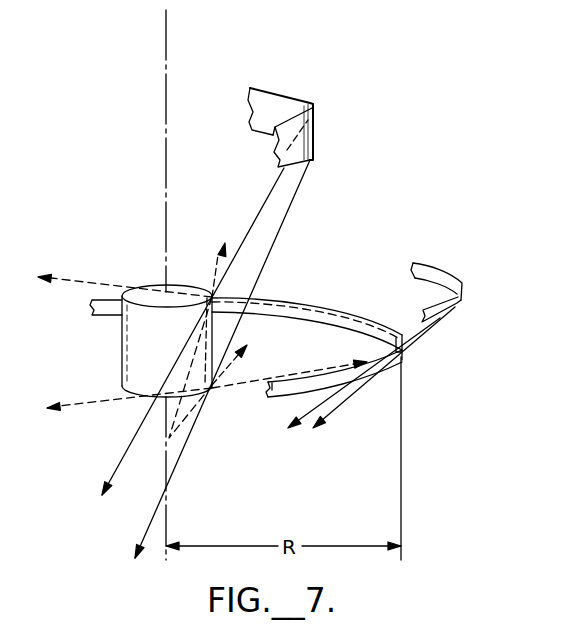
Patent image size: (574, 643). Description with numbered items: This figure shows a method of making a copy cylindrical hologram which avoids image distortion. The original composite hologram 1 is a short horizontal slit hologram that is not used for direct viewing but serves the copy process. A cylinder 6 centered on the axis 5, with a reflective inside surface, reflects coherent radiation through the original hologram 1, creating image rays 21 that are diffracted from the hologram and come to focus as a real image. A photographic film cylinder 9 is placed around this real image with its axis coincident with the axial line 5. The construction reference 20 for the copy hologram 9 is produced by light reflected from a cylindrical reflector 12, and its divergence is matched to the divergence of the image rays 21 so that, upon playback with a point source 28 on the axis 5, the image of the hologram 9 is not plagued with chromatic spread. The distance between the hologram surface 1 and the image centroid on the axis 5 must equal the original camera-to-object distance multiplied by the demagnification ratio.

The axis 5 is at (167, 36).
The cylindrical reflector 12 is at (313, 128).
The construction reference 20 is at (270, 223).
The image rays 21 is at (83, 279).
The photographic film cylinder 9 is at (122, 351).
The point source 28 is at (169, 440).
The cylinder 6 is at (463, 292).
The original hologram 1 is at (283, 398).